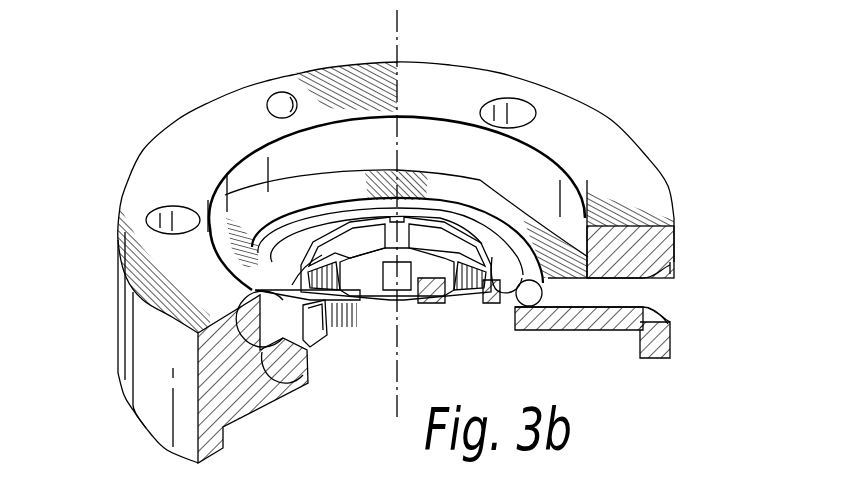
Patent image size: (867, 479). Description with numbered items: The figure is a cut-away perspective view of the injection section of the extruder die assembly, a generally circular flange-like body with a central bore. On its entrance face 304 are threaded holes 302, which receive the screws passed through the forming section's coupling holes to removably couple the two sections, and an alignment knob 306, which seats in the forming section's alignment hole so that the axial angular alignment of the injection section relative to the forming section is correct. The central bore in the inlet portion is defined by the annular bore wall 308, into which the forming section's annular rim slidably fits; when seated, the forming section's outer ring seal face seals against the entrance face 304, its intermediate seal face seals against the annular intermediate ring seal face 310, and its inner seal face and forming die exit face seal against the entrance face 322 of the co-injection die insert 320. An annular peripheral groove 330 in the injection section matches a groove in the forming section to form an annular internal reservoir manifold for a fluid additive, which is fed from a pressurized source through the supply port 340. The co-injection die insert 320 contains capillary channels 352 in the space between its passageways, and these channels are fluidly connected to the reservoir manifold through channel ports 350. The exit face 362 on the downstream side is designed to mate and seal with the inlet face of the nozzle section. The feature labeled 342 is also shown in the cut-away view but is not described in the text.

The threaded holes 302 is at (182, 215).
The entrance face 304 is at (437, 72).
The alignment knob 306 is at (280, 98).
The annular bore wall 308 is at (572, 200).
The annular intermediate ring seal face 310 is at (467, 180).
The co-injection die insert 320 is at (433, 298).
The entrance face 322 is at (460, 240).
The annular peripheral groove 330 is at (307, 384).
The supply port 340 is at (648, 284).
The chamfer 342 is at (668, 310).
The channel ports 350 is at (307, 343).
The capillary channels 352 is at (390, 188).
The exit face 362 is at (612, 333).